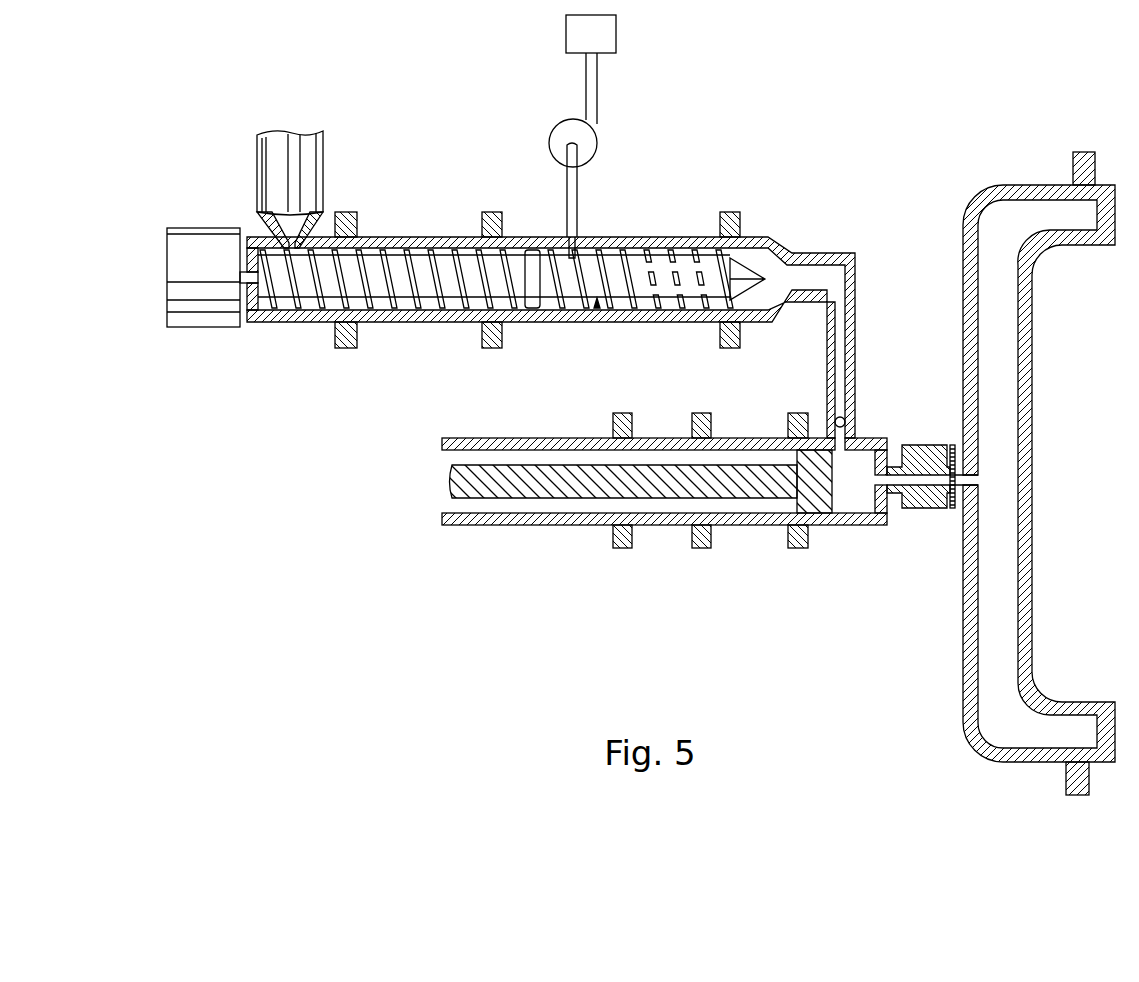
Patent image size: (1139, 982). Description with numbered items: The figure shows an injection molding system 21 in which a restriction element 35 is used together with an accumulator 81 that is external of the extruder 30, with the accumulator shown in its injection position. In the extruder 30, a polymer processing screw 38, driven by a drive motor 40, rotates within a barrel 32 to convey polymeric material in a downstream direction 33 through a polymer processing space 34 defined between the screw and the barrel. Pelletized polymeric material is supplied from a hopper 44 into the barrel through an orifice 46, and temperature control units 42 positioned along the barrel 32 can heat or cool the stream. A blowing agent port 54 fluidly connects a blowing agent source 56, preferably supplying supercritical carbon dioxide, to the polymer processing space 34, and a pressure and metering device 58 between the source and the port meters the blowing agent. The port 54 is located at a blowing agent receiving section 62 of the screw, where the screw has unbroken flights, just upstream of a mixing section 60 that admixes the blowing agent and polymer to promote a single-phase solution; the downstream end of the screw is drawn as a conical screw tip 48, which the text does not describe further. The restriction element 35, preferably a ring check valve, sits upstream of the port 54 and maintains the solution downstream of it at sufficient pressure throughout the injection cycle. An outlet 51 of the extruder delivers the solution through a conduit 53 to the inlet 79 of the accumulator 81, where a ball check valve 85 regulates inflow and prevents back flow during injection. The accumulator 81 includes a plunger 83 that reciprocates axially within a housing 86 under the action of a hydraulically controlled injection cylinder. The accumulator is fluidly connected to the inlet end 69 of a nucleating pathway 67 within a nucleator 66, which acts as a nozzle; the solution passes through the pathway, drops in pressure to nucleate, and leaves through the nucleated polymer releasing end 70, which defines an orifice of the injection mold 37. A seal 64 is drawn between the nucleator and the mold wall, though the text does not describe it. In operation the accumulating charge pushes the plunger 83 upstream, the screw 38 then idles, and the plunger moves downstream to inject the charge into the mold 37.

The system 21 is at (772, 70).
The extruder 30 is at (403, 52).
The barrel 32 is at (551, 317).
The downstream direction 33 is at (475, 142).
The polymer processing space 34 is at (378, 240).
The restriction element 35 is at (532, 255).
The injection mold 37 is at (980, 204).
The polymer processing screw 38 is at (530, 278).
The drive motor 40 is at (203, 228).
The temperature control units 42 is at (346, 212).
The hopper 44 is at (290, 172).
The orifice 46 is at (291, 237).
The screw tip 48 is at (768, 279).
The outlet 51 is at (822, 270).
The conduit 53 is at (857, 330).
The blowing agent port 54 is at (578, 210).
The blowing agent source 56 is at (616, 38).
The pressure and metering device 58 is at (560, 125).
The mixing section 60 is at (642, 325).
The blowing agent receiving section 62 is at (598, 308).
The seal 64 is at (952, 445).
The nucleator 66 is at (900, 511).
The nucleating pathway 67 is at (905, 467).
The inlet end 69 is at (885, 480).
The nucleated polymer releasing end 70 is at (958, 480).
The inlet 79 is at (838, 447).
The accumulator 81 is at (727, 475).
The plunger 83 is at (512, 438).
The ball check valve 85 is at (836, 418).
The housing 86 is at (665, 438).